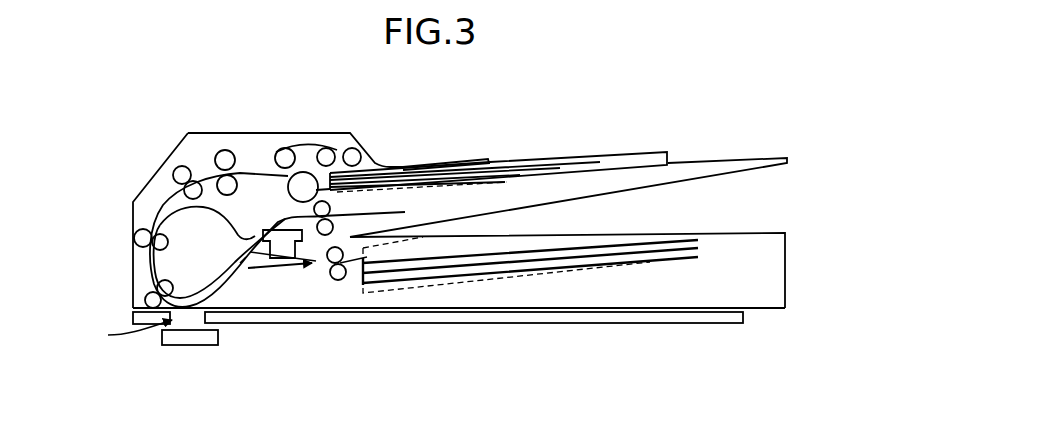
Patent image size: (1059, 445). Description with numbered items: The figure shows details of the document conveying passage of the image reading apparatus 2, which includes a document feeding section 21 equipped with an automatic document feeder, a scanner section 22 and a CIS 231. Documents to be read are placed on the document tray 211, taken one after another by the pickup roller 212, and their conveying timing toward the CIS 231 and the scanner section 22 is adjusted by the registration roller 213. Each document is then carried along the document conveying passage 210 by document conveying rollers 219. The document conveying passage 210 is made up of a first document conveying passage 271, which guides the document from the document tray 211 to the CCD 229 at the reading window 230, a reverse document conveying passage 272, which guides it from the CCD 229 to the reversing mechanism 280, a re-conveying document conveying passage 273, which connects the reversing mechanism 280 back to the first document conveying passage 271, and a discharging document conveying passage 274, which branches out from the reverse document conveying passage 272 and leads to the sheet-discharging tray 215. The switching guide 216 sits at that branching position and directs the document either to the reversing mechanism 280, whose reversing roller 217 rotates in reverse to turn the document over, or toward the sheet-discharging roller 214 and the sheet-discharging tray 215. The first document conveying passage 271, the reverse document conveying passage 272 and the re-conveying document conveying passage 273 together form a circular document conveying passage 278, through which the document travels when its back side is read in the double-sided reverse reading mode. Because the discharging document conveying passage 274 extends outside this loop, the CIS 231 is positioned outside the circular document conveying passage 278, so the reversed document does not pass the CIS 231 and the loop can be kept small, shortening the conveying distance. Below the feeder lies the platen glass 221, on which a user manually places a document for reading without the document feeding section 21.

The image reading apparatus 2 is at (505, 133).
The document feeding section 21 is at (787, 249).
The scanner section 22 is at (158, 378).
The CCD 229 is at (117, 414).
The document conveying passage 210 is at (193, 163).
The document tray 211 is at (722, 160).
The pickup roller 212 is at (358, 150).
The registration roller 213 is at (228, 150).
The sheet-discharging roller 214 is at (342, 281).
The sheet-discharging tray 215 is at (432, 292).
The switching guide 216 is at (239, 264).
The reversing roller 217 is at (322, 235).
The document conveying roller 219 is at (149, 229).
The platen glass 221 is at (667, 317).
The reading window 230 is at (116, 335).
The CIS 231 is at (283, 259).
The first document conveying passage 271 is at (152, 268).
The reverse document conveying passage 272 is at (209, 346).
The re-conveying document conveying passage 273 is at (203, 178).
The discharging document conveying passage 274 is at (320, 259).
The circular document conveying passage 278 is at (137, 283).
The reversing mechanism 280 is at (263, 208).